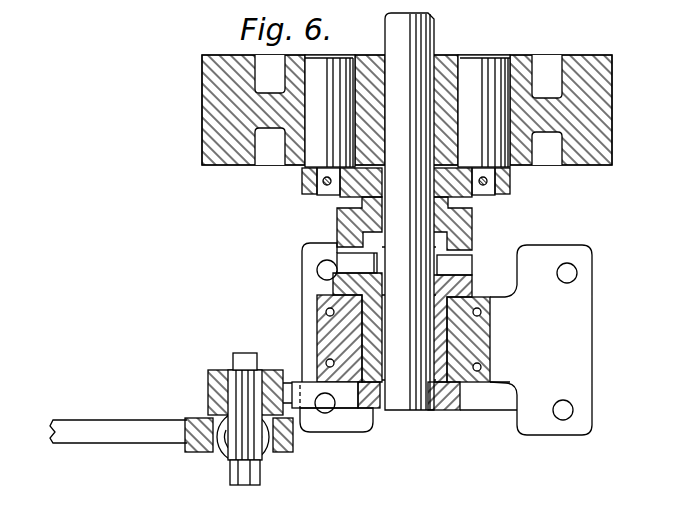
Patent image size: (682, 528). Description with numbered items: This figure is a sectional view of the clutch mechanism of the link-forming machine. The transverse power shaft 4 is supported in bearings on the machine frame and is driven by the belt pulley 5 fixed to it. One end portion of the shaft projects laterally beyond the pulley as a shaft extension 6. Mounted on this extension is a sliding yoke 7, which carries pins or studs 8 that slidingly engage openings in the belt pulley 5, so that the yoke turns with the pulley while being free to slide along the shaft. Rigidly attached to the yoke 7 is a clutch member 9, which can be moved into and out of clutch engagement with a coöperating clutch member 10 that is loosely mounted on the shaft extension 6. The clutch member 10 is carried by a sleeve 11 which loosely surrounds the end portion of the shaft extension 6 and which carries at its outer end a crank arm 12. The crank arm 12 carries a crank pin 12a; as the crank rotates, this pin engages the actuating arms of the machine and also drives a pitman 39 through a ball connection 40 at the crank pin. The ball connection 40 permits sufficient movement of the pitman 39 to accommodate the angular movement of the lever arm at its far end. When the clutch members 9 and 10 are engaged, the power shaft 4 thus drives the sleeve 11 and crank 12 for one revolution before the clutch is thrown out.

The power shaft 4 is at (395, 37).
The belt pulley 5 is at (597, 108).
The shaft extension 6 is at (411, 410).
The sliding yoke 7 is at (302, 183).
The pins or studs 8 is at (407, 111).
The clutch member 9 is at (338, 222).
The coöperating clutch member 10 is at (320, 273).
The sleeve 11 is at (487, 336).
The crank arm 12 is at (352, 403).
The crank pin 12a is at (252, 485).
The pitman 39 is at (101, 428).
The ball connection 40 is at (226, 458).